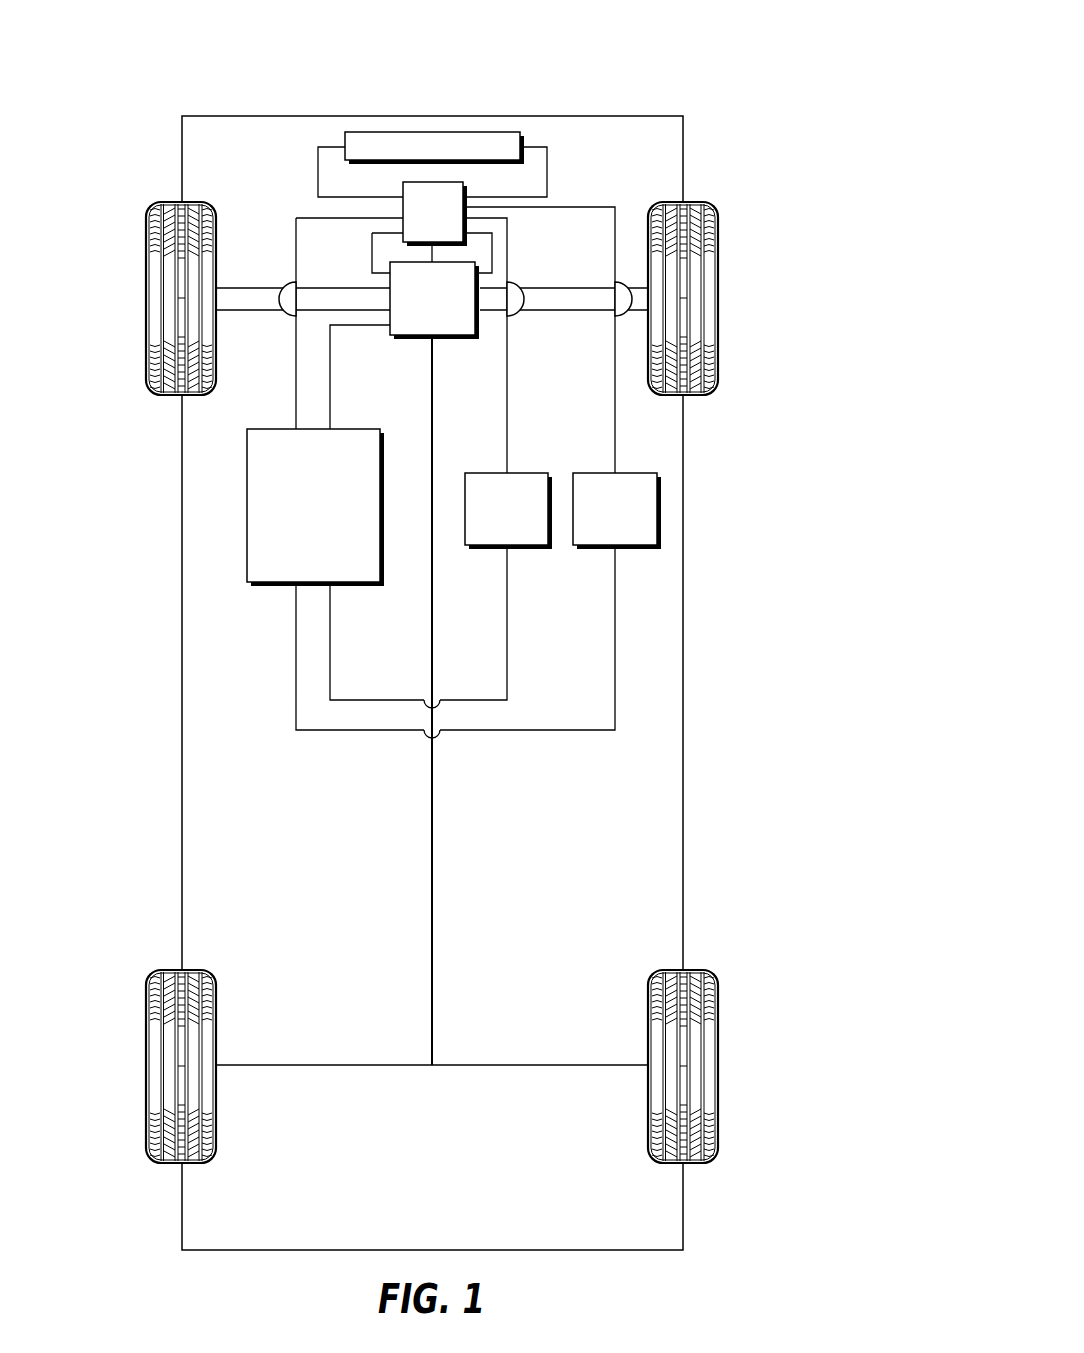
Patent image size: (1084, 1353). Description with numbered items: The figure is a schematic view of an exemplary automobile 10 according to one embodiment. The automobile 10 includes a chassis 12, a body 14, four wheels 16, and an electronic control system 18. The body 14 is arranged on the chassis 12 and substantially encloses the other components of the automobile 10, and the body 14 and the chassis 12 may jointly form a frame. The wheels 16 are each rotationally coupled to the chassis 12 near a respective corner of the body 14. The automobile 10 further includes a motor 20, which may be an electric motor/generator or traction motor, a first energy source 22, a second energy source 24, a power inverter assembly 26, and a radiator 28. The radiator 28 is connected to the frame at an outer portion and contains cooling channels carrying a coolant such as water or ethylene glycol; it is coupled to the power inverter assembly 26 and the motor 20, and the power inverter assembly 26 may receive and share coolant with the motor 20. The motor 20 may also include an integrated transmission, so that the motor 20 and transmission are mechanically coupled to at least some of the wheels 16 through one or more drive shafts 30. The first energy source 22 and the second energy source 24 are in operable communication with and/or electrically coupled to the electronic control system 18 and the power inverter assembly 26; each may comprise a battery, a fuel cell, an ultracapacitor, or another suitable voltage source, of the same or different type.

The automobile 10 is at (703, 38).
The chassis 12 is at (432, 935).
The body 14 is at (197, 507).
The wheels 16 is at (142, 265).
The electronic control system 18 is at (298, 518).
The motor 20 is at (417, 311).
The first energy source 22 is at (492, 521).
The second energy source 24 is at (600, 521).
The power inverter assembly 26 is at (418, 225).
The radiator 28 is at (382, 132).
The drive shafts 30 is at (273, 288).